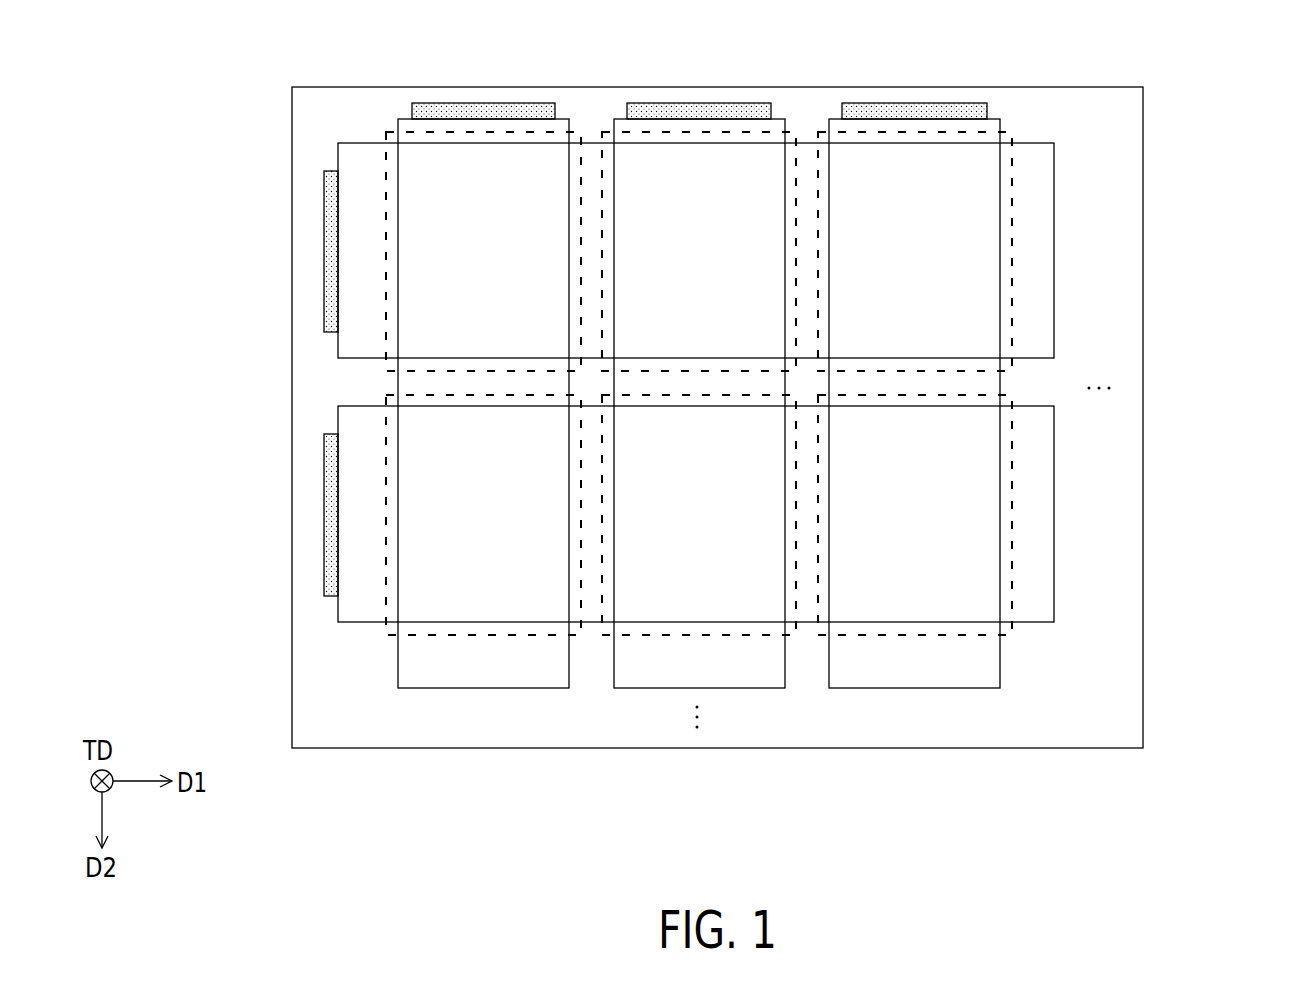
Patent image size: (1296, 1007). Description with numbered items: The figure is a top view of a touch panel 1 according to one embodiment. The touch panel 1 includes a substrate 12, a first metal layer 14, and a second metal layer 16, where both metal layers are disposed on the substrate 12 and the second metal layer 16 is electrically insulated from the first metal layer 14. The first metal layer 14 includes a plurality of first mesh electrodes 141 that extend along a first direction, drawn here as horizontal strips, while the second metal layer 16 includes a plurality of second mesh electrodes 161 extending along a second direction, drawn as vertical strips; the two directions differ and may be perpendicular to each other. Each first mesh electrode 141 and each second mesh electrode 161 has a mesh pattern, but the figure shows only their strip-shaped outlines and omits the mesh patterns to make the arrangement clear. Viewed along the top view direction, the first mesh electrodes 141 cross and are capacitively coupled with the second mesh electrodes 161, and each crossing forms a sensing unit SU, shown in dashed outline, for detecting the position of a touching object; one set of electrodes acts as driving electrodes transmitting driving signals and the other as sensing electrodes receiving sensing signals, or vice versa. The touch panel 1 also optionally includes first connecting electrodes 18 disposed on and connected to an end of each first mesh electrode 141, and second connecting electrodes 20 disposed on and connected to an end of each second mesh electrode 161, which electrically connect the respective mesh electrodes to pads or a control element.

The touch panel 1 is at (1208, 88).
The substrate 12 is at (1121, 726).
The first metal layer 14 is at (227, 227).
The first mesh electrode 141 is at (350, 245).
The second metal layer 16 is at (922, 803).
The second mesh electrode 161 is at (462, 672).
The first connecting electrode 18 is at (327, 196).
The second connecting electrode 20 is at (475, 107).
The sensing unit SU is at (1012, 239).